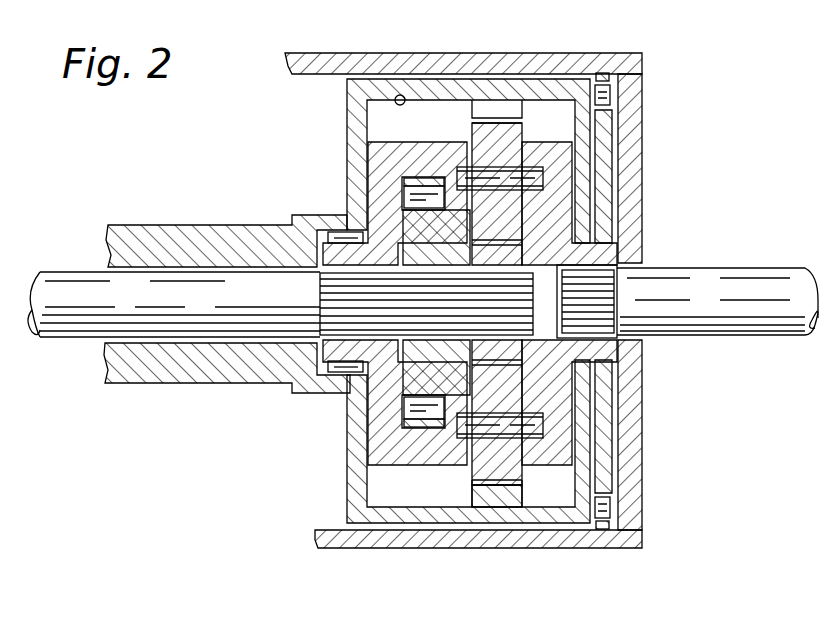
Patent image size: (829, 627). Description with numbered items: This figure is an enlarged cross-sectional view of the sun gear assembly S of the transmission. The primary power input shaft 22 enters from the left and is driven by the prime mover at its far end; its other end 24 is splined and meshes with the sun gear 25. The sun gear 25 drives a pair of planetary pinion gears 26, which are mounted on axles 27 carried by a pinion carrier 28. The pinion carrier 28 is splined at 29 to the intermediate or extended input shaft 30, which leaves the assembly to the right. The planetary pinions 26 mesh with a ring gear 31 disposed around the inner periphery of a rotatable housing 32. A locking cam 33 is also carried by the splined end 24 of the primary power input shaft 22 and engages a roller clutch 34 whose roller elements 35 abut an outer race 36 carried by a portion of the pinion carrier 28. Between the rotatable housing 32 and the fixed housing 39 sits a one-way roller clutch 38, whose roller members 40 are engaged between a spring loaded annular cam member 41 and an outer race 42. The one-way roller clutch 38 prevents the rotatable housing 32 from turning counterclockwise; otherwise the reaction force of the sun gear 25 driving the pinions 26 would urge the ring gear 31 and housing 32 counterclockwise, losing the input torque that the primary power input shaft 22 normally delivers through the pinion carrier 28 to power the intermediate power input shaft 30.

The primary power input shaft 22 is at (66, 282).
The splined end of primary input shaft 24 is at (330, 298).
The sun gear 25 is at (483, 348).
The planetary pinion gears 26 is at (505, 135).
The axles 27 is at (540, 178).
The pinion carrier 28 is at (378, 152).
The spline 29 is at (600, 322).
The intermediate input shaft 30 is at (768, 276).
The ring gear 31 is at (487, 120).
The rotatable housing 32 is at (400, 95).
The locking cam 33 is at (347, 218).
The roller clutch 34 is at (398, 197).
The roller elements 35 is at (405, 410).
The outer race 36 is at (400, 428).
The one-way roller clutch 38 is at (612, 470).
The fixed housing 39 is at (338, 62).
The roller members 40 is at (605, 94).
The spring loaded annular cam member 41 is at (603, 145).
The outer race 42 is at (603, 74).
The sun gear assembly S is at (300, 445).